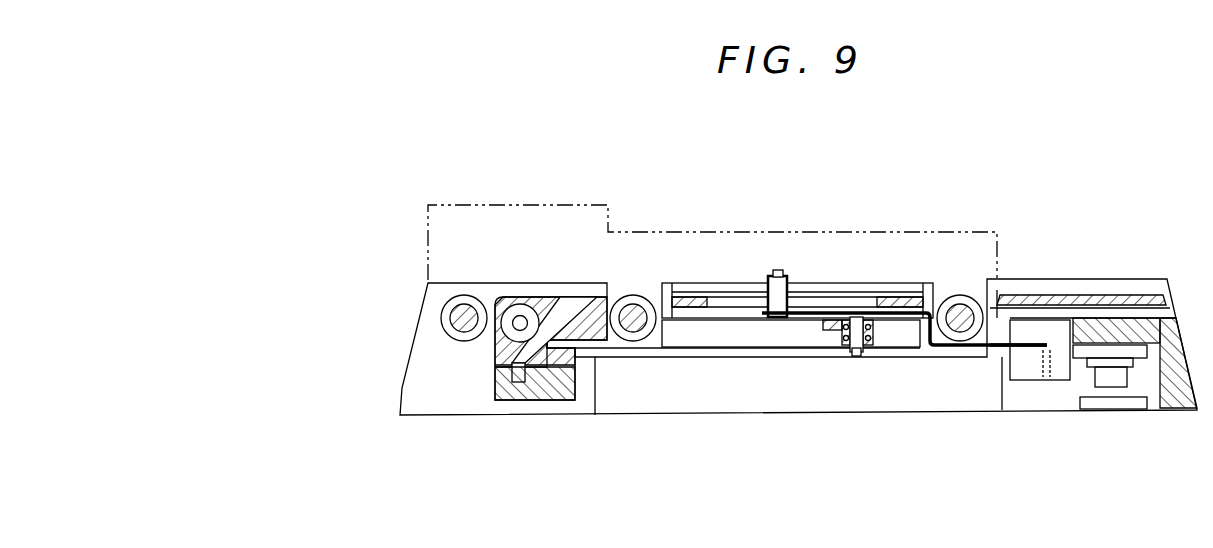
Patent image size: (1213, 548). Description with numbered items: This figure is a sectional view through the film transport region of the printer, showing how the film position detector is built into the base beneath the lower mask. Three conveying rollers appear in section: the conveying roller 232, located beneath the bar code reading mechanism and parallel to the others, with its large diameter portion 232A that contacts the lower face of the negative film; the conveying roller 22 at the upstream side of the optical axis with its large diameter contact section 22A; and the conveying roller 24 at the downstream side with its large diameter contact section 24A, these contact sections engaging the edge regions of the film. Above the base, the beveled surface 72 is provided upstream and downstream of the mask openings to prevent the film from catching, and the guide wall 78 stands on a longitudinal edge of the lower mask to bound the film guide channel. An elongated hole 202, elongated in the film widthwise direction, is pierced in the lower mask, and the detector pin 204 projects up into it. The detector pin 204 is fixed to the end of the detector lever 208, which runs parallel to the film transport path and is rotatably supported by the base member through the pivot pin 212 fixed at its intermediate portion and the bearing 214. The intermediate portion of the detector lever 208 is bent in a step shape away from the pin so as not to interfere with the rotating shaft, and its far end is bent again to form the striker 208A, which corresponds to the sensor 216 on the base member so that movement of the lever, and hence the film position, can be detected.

The conveying roller 22 is at (631, 330).
The large diameter contact section 22A is at (646, 334).
The conveying roller 24 is at (958, 322).
The large diameter contact section 24A is at (976, 334).
The beveled surface 72 is at (712, 300).
The guide wall 78 is at (820, 284).
The elongated hole 202 is at (772, 283).
The detector pin 204 is at (787, 285).
The detector lever 208 is at (850, 312).
The striker 208A is at (1026, 350).
The pivot pin 212 is at (857, 326).
The bearing 214 is at (846, 342).
The sensor 216 is at (1042, 370).
The conveying roller 232 is at (460, 333).
The large diameter portion 232A is at (443, 329).